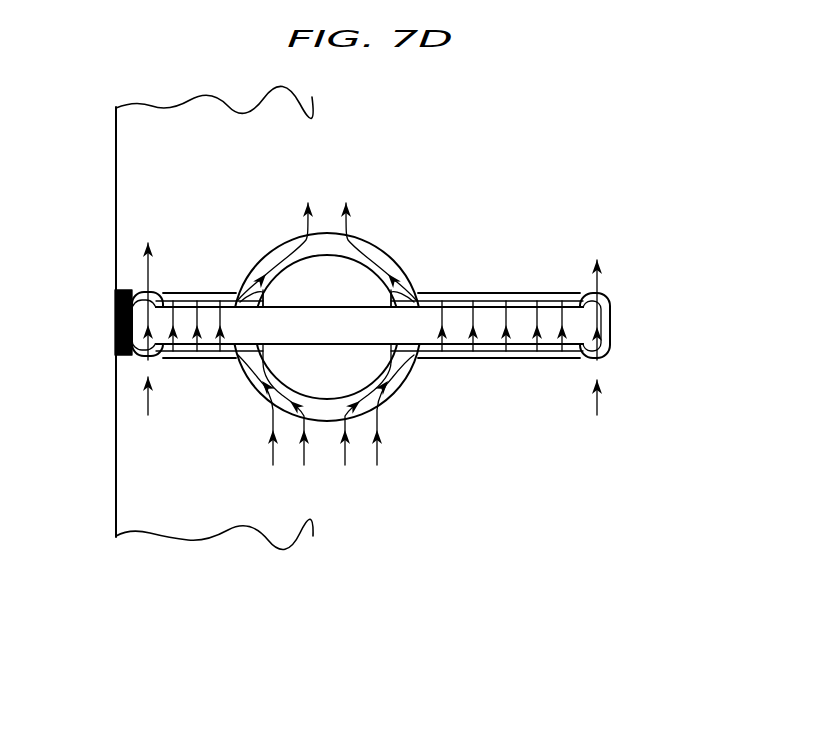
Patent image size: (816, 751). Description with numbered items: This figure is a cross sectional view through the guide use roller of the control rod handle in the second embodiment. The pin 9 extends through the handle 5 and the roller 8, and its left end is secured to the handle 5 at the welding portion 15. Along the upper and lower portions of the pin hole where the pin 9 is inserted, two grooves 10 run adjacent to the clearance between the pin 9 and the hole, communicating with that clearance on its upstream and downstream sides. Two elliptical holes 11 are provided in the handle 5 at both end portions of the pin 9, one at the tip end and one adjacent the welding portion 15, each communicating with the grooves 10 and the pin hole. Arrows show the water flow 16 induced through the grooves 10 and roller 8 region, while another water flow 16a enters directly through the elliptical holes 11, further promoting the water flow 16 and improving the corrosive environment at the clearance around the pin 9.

The handle 5 is at (116, 152).
The roller 8 is at (265, 382).
The pin 9 is at (205, 325).
The grooves 10 is at (517, 293).
The elliptical holes 11 is at (140, 297).
The welding portion 15 is at (115, 346).
The water flow 16 is at (378, 450).
The water flow 16a is at (148, 385).